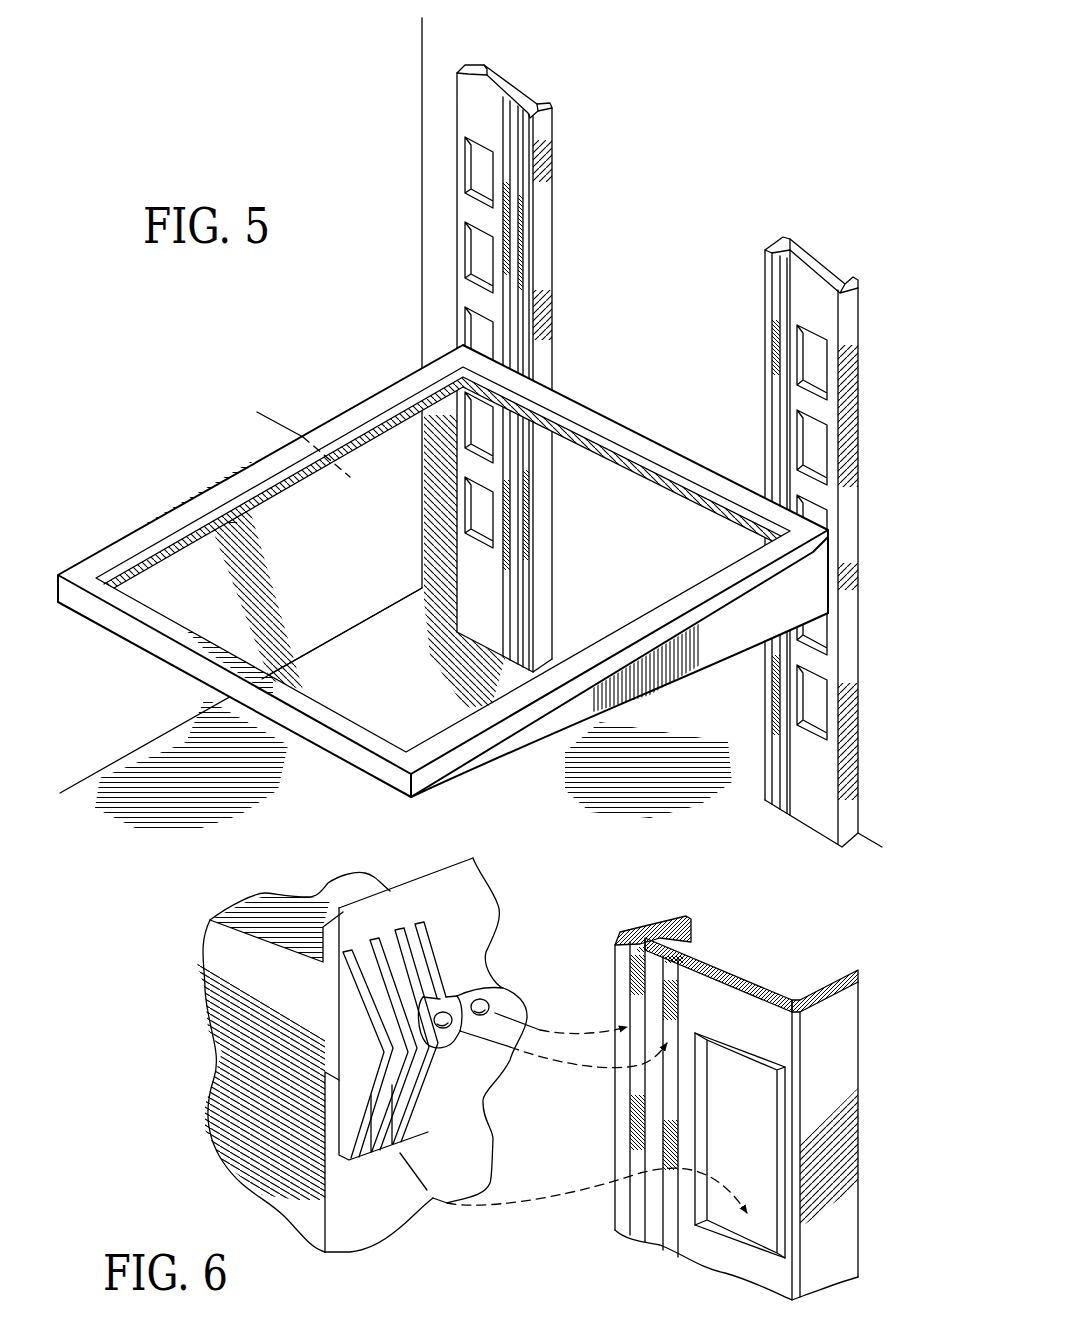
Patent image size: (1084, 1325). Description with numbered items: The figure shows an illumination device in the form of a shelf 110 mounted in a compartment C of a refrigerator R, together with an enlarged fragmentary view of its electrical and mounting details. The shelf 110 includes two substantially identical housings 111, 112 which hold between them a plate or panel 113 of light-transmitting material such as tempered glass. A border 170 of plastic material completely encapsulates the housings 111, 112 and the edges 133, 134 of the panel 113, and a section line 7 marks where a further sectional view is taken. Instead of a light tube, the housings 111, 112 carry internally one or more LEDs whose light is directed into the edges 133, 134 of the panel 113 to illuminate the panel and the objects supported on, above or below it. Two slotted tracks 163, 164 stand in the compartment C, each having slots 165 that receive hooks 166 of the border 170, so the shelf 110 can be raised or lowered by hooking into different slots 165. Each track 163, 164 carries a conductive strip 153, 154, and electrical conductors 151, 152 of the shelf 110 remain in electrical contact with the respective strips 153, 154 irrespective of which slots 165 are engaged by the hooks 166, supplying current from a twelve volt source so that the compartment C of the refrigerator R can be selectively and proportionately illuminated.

In FIG. 5, the shelf 110 is at (633, 352).
In FIG. 6, the shelf 110 is at (188, 1098).
In FIG. 5, the housing 111 is at (440, 559).
In FIG. 5, the housing 112 is at (553, 713).
In FIG. 5, the light-transmitting panel 113 is at (385, 705).
In FIG. 5, the edge 133 is at (212, 540).
In FIG. 5, the edge 134 is at (602, 640).
In FIG. 6, the electrical conductor 151 is at (483, 995).
In FIG. 6, the electrical conductor 152 is at (458, 1002).
In FIG. 5, the conductive strip 153 is at (492, 110).
In FIG. 6, the conductive strip 153 is at (673, 1050).
In FIG. 5, the conductive strip 154 is at (523, 147).
In FIG. 6, the conductive strip 154 is at (635, 1010).
In FIG. 5, the track 163 is at (540, 225).
In FIG. 5, the track 164 is at (848, 300).
In FIG. 6, the track 164 is at (822, 1040).
In FIG. 5, the slot 165 is at (468, 248).
In FIG. 6, the slot 165 is at (737, 1050).
In FIG. 6, the hook 166 is at (370, 1143).
In FIG. 5, the border 170 is at (162, 656).
In FIG. 5, the section line 7 is at (287, 399).
In FIG. 5, the compartment C is at (128, 662).
In FIG. 5, the refrigerator R is at (665, 130).